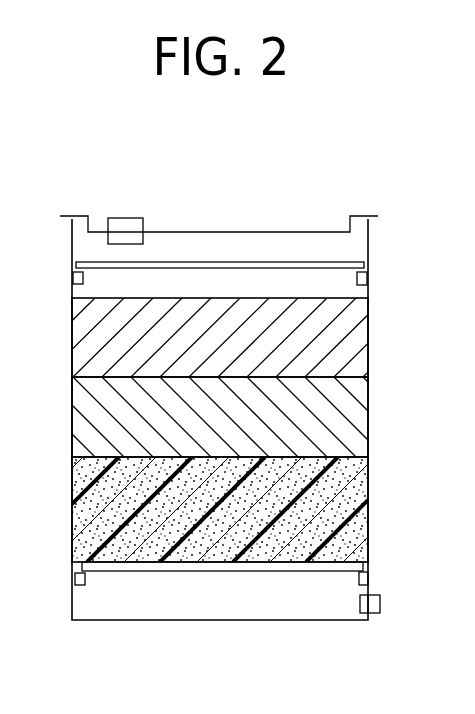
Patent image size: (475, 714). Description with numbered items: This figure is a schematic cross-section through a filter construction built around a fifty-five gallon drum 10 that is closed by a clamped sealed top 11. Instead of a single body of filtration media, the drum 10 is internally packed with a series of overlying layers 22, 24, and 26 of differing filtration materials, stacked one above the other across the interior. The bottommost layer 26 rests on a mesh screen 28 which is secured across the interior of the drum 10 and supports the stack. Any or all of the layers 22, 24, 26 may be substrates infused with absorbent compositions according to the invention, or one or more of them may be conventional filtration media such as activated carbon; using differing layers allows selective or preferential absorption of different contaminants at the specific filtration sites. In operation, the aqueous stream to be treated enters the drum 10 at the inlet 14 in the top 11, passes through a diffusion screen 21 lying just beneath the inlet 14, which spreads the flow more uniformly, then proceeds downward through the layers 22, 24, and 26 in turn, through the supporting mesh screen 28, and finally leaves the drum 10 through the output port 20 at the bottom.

The drum 10 is at (53, 413).
The clamped sealed top 11 is at (381, 214).
The inlet 14 is at (126, 206).
The output port 20 is at (381, 604).
The diffusion screen 21 is at (377, 263).
The filtration layer 22 is at (333, 338).
The filtration layer 24 is at (340, 412).
The bottommost filtration layer 26 is at (355, 483).
The mesh screen 28 is at (364, 542).